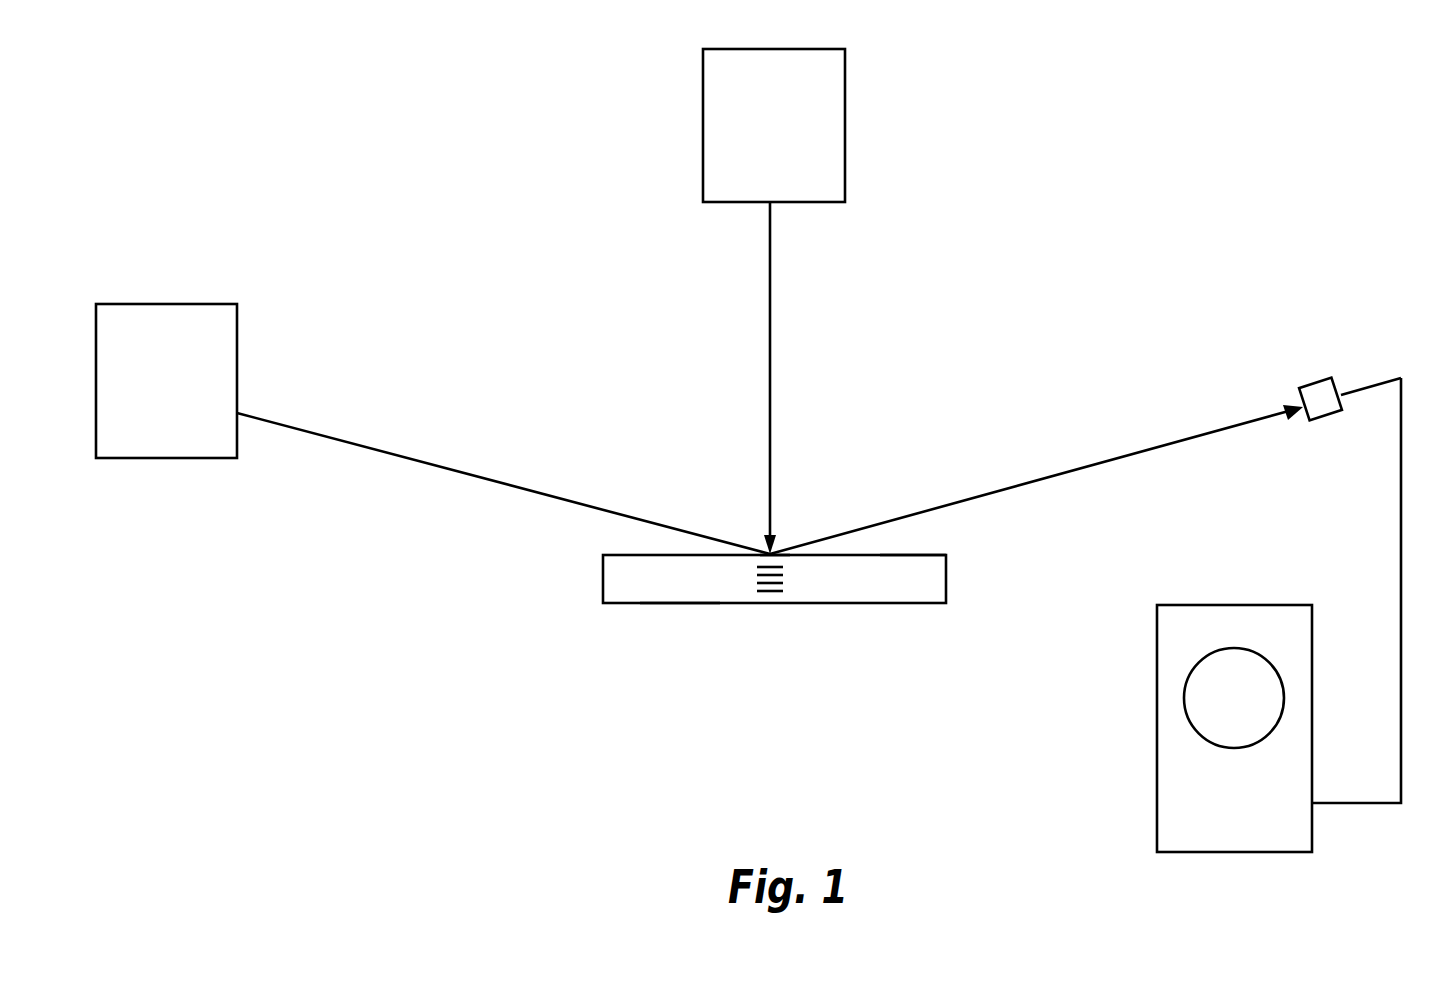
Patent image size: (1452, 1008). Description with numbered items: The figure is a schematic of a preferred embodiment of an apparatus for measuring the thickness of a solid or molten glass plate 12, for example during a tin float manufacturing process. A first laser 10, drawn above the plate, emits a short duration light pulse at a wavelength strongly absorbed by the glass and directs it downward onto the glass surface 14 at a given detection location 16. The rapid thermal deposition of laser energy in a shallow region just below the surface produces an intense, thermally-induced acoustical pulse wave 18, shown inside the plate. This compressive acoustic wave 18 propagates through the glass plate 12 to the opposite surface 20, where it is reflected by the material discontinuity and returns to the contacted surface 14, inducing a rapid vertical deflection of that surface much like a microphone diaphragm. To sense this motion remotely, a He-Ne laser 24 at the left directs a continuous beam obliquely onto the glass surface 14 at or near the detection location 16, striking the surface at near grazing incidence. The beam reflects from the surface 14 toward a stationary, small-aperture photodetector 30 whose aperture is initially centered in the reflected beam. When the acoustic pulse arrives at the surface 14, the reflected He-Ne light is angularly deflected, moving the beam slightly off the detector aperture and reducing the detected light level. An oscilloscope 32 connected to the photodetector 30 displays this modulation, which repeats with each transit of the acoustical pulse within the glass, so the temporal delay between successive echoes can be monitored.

The first laser 10 is at (703, 102).
The glass plate 12 is at (665, 592).
The glass surface 14 is at (918, 553).
The detection location 16 is at (777, 545).
The acoustical pulse wave 18 is at (792, 585).
The opposite surface 20 is at (682, 603).
The He-Ne laser 24 is at (180, 394).
The photodetector 30 is at (1337, 387).
The oscilloscope 32 is at (1157, 770).